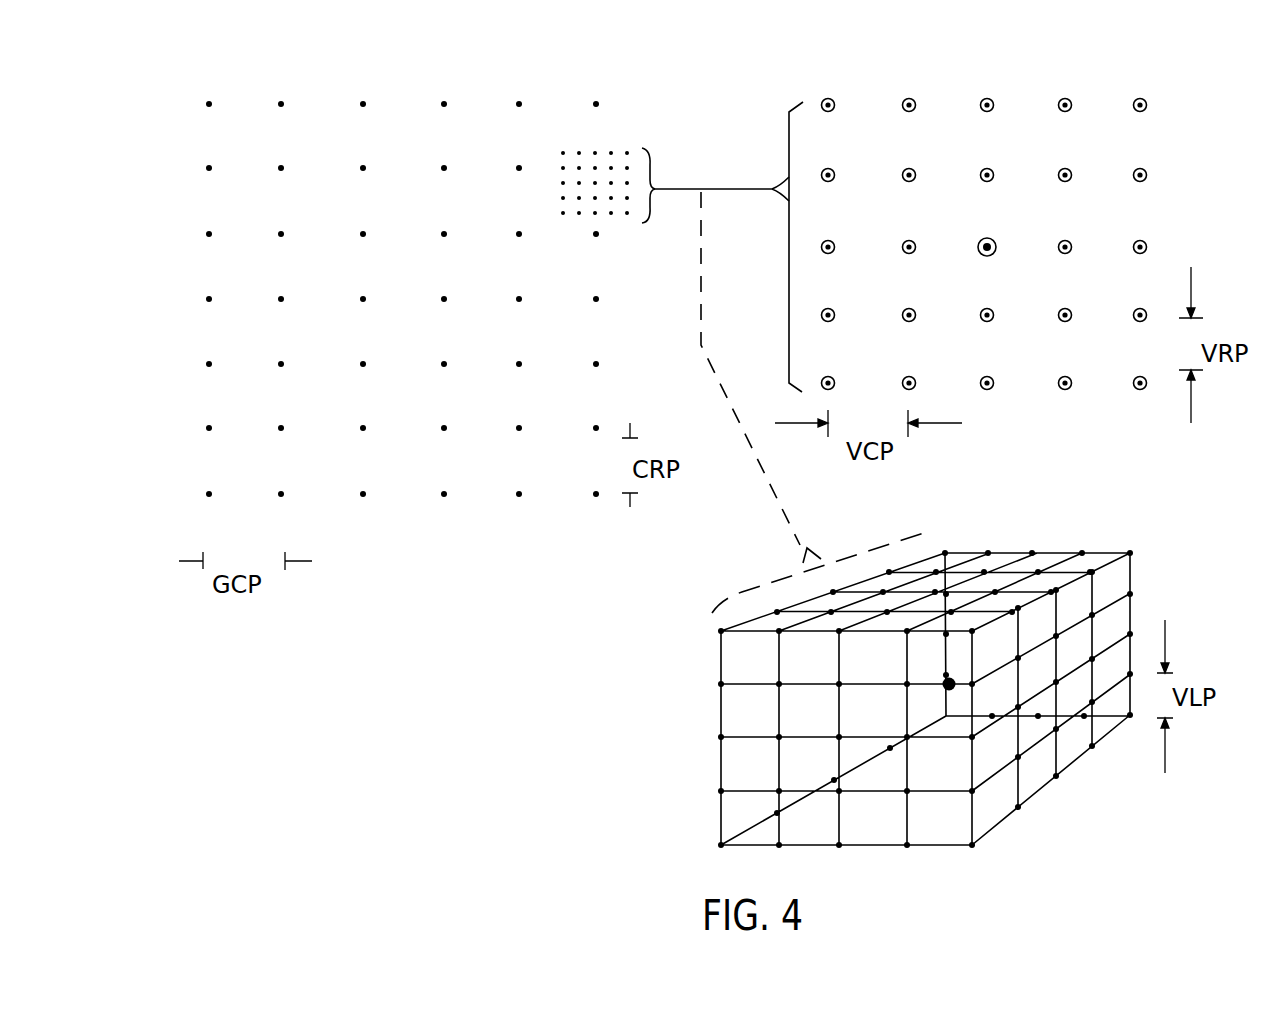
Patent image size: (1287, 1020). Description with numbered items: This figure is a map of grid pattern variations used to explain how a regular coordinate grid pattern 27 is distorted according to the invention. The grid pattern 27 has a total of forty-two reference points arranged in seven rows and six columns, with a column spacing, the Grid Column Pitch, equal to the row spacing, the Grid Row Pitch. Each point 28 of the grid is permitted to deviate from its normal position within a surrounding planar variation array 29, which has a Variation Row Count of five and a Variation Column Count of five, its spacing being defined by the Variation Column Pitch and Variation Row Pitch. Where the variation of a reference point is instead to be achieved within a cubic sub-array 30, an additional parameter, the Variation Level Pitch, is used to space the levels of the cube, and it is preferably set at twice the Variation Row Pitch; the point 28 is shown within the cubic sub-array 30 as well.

The regular coordinate grid pattern 27 is at (615, 113).
The point 28 is at (594, 186).
The planar variation array 29 is at (608, 230).
The cubic sub-array 30 is at (1143, 585).